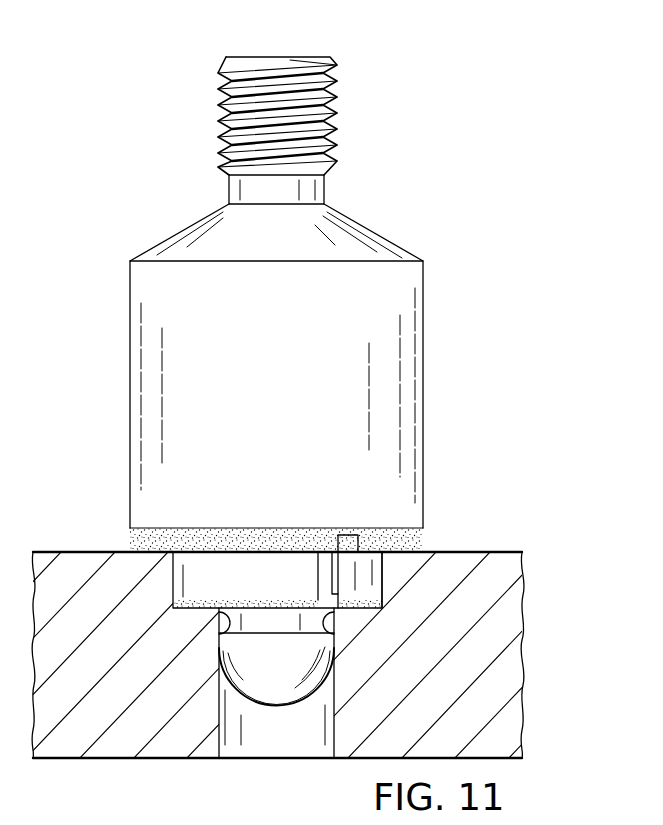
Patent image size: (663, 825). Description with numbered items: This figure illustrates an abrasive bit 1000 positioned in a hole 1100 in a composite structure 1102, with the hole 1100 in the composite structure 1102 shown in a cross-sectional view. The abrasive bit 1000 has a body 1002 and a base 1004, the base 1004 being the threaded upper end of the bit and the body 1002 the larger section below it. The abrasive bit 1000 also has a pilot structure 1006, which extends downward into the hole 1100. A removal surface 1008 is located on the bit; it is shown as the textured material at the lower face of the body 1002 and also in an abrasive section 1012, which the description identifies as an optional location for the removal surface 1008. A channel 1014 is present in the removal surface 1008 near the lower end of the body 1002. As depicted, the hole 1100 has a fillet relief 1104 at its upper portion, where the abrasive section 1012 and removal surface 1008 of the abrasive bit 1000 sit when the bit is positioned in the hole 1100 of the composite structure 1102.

The abrasive bit 1000 is at (313, 278).
The body 1002 is at (424, 393).
The base 1004 is at (218, 112).
The pilot structure 1006 is at (278, 693).
The removal surface 1008 is at (143, 553).
The abrasive section 1012 is at (190, 610).
The channel 1014 is at (346, 548).
The hole 1100 is at (260, 743).
The composite structure 1102 is at (515, 682).
The fillet relief 1104 is at (362, 604).